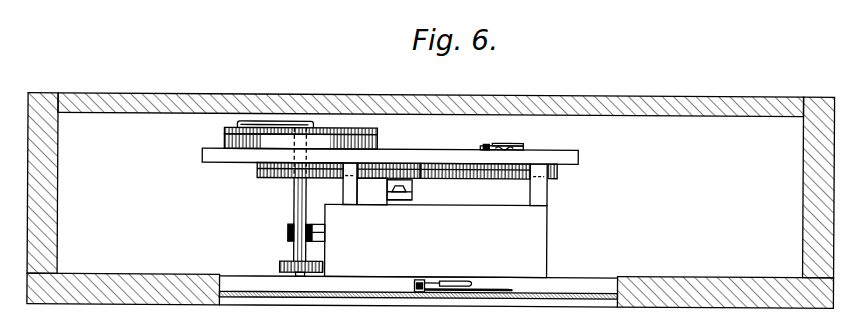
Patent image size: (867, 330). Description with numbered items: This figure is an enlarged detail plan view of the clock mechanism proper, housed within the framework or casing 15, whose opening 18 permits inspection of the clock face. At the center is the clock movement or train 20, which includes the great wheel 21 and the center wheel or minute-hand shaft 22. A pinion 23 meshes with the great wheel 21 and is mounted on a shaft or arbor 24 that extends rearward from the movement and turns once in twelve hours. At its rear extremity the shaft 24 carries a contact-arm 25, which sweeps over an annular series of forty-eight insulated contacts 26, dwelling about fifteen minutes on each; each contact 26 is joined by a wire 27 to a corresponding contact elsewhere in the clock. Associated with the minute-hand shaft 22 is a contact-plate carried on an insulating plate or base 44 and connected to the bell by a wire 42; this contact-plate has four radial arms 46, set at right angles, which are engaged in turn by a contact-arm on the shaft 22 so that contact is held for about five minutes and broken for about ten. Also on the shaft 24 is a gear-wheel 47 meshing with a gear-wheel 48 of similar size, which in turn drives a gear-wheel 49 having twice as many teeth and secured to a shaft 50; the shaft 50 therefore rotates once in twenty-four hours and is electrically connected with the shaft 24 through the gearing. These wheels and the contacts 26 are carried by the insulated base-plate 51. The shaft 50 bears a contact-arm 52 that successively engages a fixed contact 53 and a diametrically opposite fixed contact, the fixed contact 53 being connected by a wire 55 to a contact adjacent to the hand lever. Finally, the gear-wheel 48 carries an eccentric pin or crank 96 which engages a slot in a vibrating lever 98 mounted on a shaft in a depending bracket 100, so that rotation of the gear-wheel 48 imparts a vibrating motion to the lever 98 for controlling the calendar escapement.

The framework or casing 15 is at (57, 242).
The opening 18 is at (620, 282).
The clock movement or train 20 is at (436, 240).
The great wheel 21 is at (324, 268).
The center wheel or minute-hand shaft 22 is at (424, 281).
The pinion 23 is at (282, 265).
The shaft or arbor 24 is at (294, 202).
The contact-arm 25 is at (259, 122).
The insulated contacts 26 is at (223, 132).
The wire 27 is at (378, 126).
The wire 42 is at (466, 282).
The plate or base of insulating material 44 is at (408, 277).
The radial arms 46 is at (414, 284).
The gear-wheel 47 is at (258, 176).
The gear-wheel 48 is at (381, 184).
The gear-wheel 49 is at (481, 180).
The shaft 50 is at (485, 149).
The base-plate 51 is at (578, 158).
The contact-arm 52 is at (524, 146).
The fixed contact 53 is at (494, 146).
The wire 55 is at (514, 152).
The eccentric pin or crank 96 is at (406, 192).
The vibrating lever 98 is at (411, 186).
The depending bracket 100 is at (395, 203).